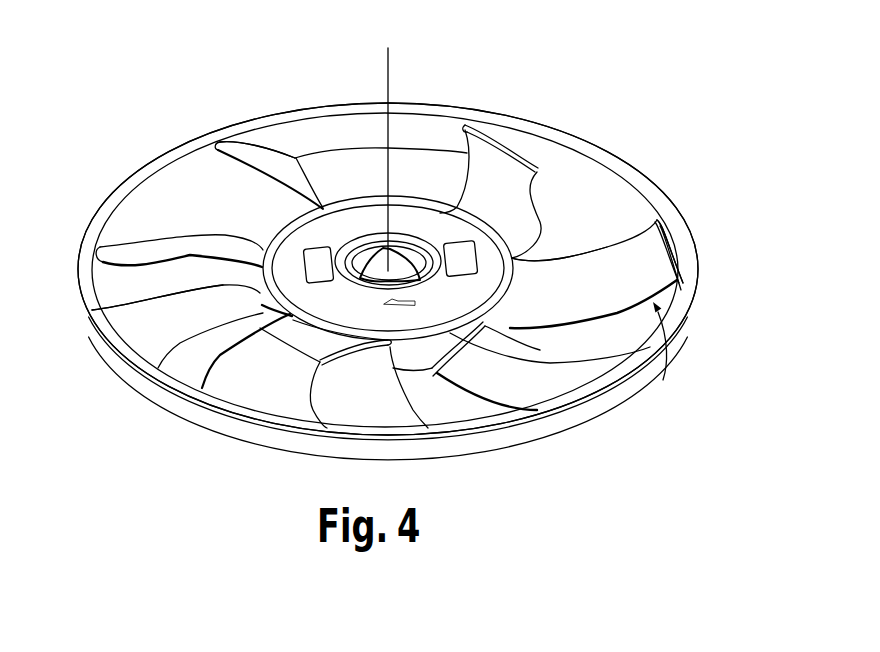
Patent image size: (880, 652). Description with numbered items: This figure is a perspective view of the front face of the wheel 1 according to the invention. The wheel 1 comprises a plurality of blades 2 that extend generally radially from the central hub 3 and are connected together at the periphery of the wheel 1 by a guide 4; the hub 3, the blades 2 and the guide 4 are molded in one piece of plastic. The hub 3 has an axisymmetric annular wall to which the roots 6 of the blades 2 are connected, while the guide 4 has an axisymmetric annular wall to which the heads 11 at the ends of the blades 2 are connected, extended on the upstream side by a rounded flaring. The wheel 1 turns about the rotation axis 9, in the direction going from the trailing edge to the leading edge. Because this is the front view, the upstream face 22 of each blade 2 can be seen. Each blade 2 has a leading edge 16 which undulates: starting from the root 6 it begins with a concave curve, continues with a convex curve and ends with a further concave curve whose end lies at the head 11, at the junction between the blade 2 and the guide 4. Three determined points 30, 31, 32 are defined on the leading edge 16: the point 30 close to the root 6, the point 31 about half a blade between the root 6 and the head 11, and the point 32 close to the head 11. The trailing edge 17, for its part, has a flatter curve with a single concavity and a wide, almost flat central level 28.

The wheel 1 is at (158, 102).
The blades 2 is at (280, 184).
The central hub 3 is at (437, 182).
The guide 4 is at (112, 200).
The roots 6 is at (95, 310).
The rotation axis 9 is at (388, 60).
The heads 11 is at (261, 146).
The leading edge 16 is at (313, 405).
The trailing edge 17 is at (413, 407).
The upstream face 22 is at (568, 257).
The central level 28 is at (598, 248).
The determined point 30 is at (548, 343).
The determined point 31 is at (617, 331).
The determined point 32 is at (655, 378).